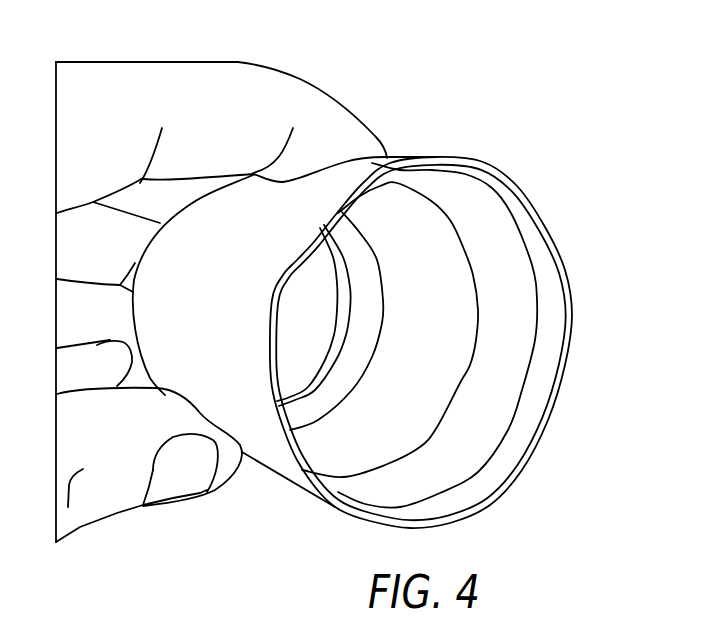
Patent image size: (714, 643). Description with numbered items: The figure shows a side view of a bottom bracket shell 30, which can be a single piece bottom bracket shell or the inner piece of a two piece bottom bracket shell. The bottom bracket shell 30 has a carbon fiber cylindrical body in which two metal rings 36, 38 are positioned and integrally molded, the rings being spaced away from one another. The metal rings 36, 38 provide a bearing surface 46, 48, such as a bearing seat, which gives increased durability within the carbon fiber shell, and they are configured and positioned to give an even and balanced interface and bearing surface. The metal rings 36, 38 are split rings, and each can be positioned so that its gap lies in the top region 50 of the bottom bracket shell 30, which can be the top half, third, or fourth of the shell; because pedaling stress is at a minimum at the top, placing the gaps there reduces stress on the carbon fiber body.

The bottom bracket shell 30 is at (498, 98).
The top region 50 is at (507, 178).
The metal ring 36 is at (538, 322).
The bearing surface 46 is at (497, 293).
The bearing surface 48 is at (353, 355).
The metal ring 38 is at (345, 325).